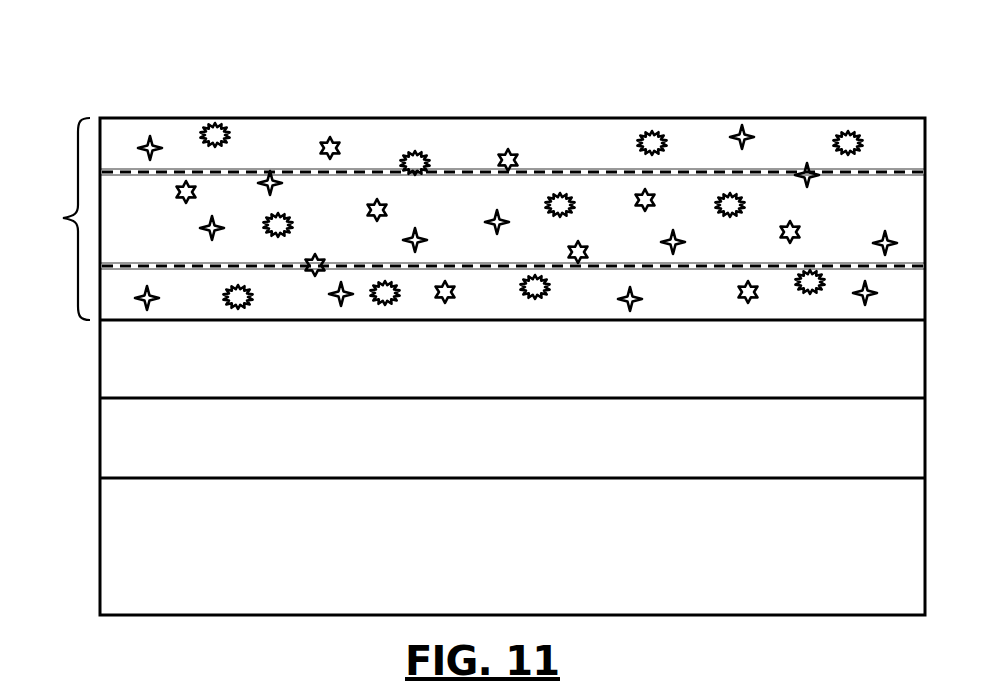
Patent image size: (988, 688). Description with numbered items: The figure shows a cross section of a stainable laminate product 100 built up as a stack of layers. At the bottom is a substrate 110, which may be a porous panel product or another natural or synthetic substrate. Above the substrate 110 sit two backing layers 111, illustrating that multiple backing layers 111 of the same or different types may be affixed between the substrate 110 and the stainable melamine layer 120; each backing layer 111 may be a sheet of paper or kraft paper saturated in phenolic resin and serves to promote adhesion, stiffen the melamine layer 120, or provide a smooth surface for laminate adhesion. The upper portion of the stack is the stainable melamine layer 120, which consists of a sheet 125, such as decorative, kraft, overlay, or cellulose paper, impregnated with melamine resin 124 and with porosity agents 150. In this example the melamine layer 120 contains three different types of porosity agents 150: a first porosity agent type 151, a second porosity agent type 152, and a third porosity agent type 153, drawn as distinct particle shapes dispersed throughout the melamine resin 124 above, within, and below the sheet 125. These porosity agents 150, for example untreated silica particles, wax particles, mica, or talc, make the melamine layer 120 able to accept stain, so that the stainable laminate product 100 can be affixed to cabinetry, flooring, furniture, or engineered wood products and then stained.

The stainable laminate product 100 is at (808, 108).
The substrate 110 is at (512, 537).
The backing layer 111 is at (512, 391).
The stainable melamine layer 120 is at (63, 218).
The melamine resin 124 is at (292, 138).
The sheet 125 is at (512, 219).
The porosity agent 150 is at (463, 171).
The first porosity agent type 151 is at (150, 140).
The second porosity agent type 152 is at (512, 148).
The third porosity agent type 153 is at (660, 135).